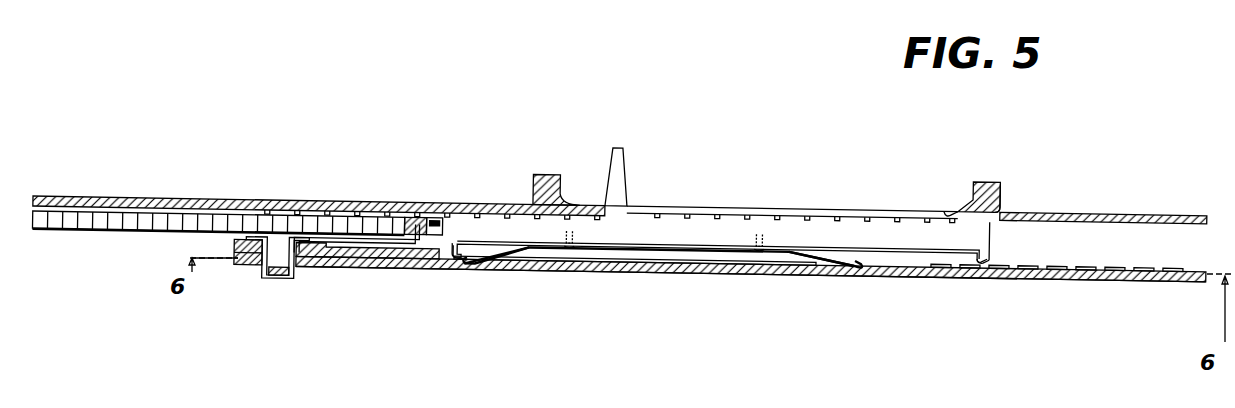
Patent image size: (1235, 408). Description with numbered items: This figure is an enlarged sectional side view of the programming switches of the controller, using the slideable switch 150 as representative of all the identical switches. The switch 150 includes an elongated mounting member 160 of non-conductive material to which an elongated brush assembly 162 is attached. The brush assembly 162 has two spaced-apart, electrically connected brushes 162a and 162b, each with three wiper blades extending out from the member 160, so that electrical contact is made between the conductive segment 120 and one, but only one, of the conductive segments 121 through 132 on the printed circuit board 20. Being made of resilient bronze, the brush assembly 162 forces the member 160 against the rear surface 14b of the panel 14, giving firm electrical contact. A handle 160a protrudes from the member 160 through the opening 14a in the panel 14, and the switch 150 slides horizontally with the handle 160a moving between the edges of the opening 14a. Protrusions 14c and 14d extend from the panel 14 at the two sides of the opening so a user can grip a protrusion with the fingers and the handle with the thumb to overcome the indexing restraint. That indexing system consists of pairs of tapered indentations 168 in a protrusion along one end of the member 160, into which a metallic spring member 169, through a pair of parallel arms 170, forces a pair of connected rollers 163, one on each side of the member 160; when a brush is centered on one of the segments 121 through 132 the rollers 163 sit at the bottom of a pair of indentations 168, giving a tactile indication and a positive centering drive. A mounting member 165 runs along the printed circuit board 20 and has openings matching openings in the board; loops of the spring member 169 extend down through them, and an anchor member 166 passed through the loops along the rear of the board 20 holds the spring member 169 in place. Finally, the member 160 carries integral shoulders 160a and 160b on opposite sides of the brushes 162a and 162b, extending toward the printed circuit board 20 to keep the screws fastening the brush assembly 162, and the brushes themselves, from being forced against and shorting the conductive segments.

The panel 14 is at (1012, 210).
The opening 14a is at (949, 210).
The rear surface 14b is at (1108, 214).
The protrusion 14c is at (542, 174).
The protrusion 14d is at (983, 180).
The printed circuit board 20 is at (1055, 282).
The conductive segment 120 is at (652, 262).
The conductive segment 121 is at (893, 272).
The conductive segment 132 is at (1175, 270).
The slideable switch 150 is at (718, 205).
The mounting member 160 is at (992, 236).
The handle 160a is at (617, 147).
The shoulder 160b is at (452, 258).
The brush assembly 162 is at (788, 238).
The brush 162a is at (857, 258).
The brush 162b is at (478, 256).
The rollers 163 is at (434, 216).
The mounting member 165 is at (235, 251).
The anchor member 166 is at (272, 278).
The tapered indentations 168 is at (162, 206).
The spring member 169 is at (295, 282).
The arms 170 is at (345, 238).